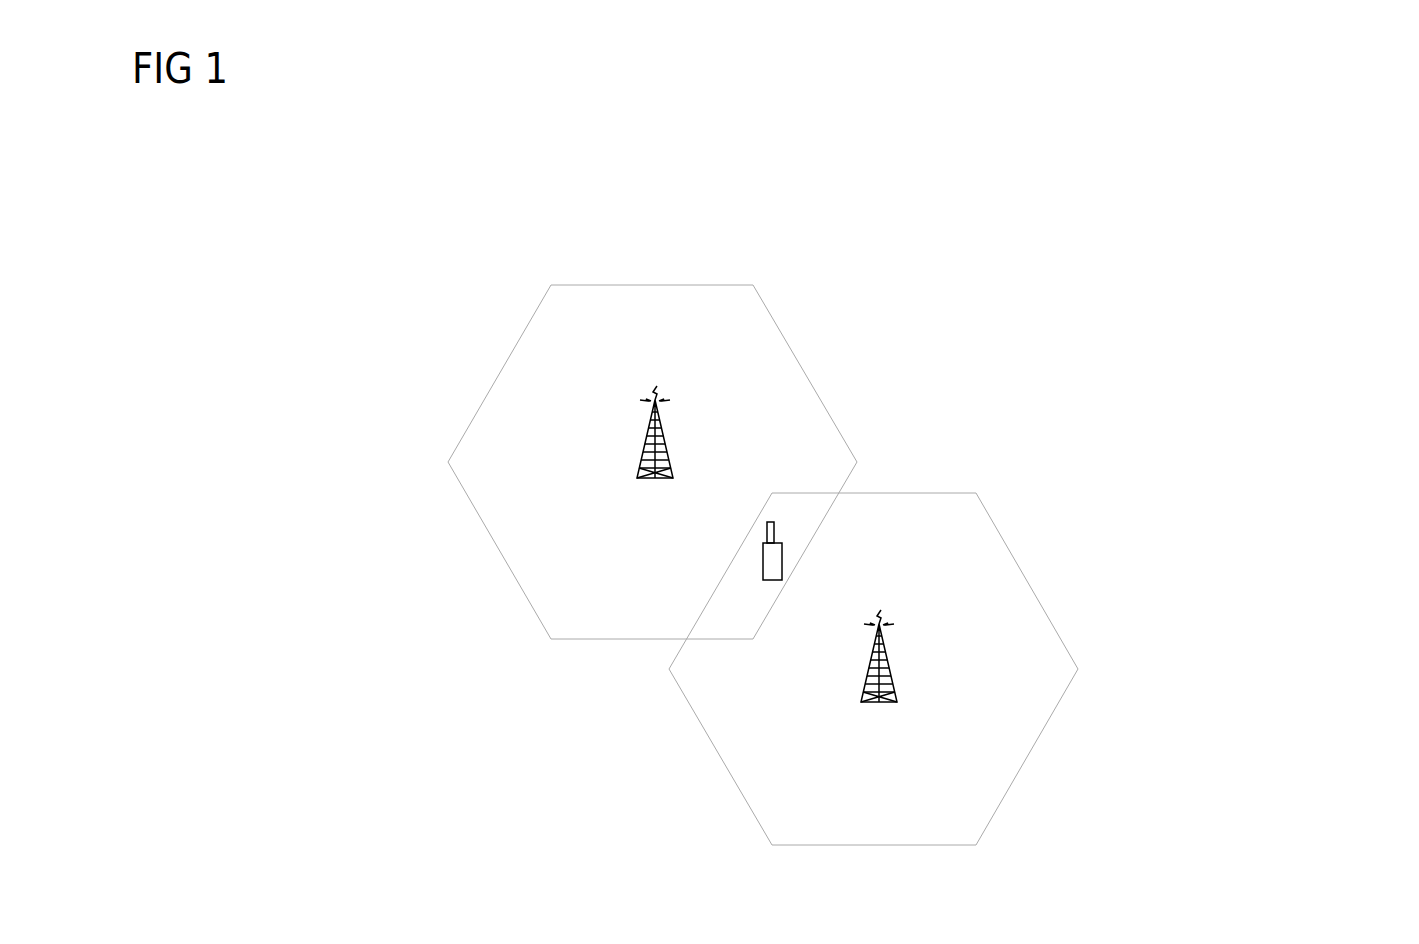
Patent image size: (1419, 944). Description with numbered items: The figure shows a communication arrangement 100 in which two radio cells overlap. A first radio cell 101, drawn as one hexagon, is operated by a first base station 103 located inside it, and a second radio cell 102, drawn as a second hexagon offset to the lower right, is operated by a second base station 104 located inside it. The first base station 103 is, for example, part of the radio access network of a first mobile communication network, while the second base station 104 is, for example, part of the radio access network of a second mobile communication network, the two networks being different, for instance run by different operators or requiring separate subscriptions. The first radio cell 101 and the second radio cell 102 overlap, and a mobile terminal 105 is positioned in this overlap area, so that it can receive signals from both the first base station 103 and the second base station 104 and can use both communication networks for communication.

The communication arrangement 100 is at (1312, 138).
The first radio cell 101 is at (775, 322).
The second radio cell 102 is at (963, 492).
The first base station 103 is at (665, 434).
The second base station 104 is at (888, 654).
The mobile terminal 105 is at (782, 557).